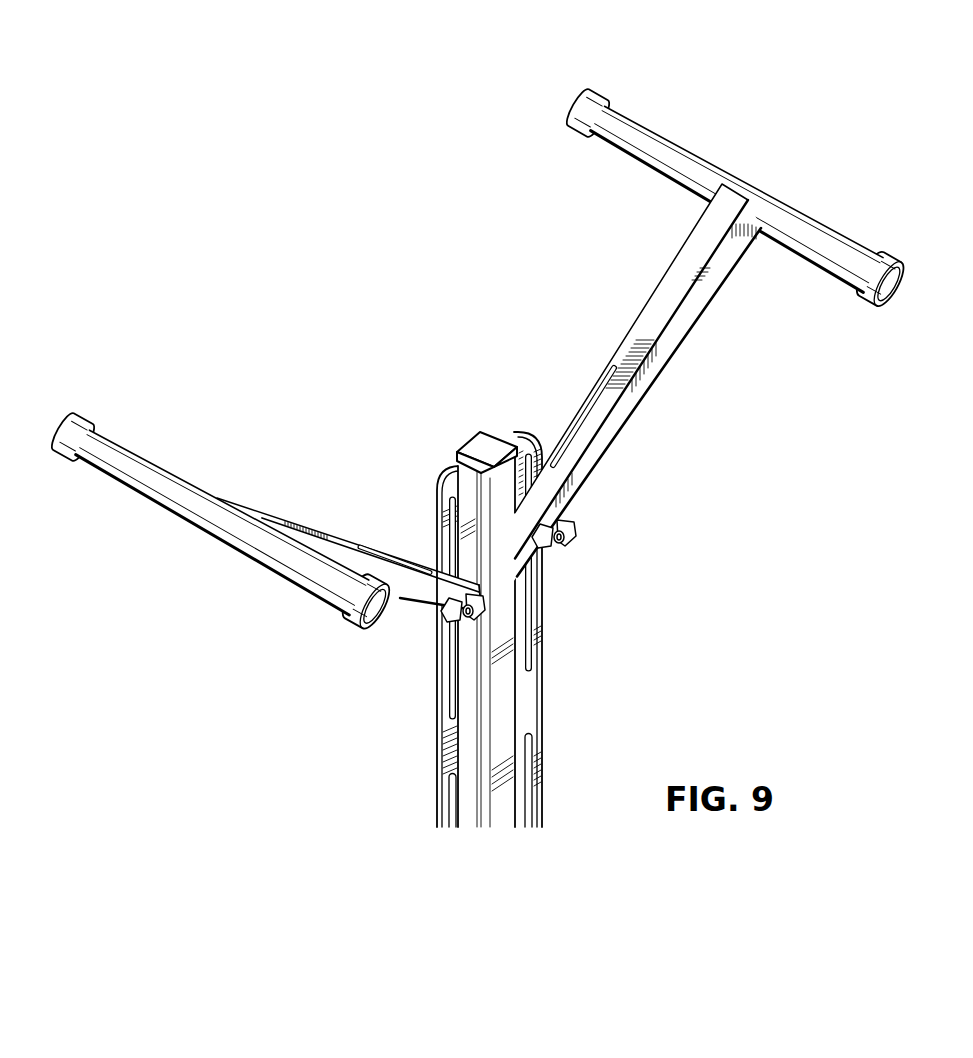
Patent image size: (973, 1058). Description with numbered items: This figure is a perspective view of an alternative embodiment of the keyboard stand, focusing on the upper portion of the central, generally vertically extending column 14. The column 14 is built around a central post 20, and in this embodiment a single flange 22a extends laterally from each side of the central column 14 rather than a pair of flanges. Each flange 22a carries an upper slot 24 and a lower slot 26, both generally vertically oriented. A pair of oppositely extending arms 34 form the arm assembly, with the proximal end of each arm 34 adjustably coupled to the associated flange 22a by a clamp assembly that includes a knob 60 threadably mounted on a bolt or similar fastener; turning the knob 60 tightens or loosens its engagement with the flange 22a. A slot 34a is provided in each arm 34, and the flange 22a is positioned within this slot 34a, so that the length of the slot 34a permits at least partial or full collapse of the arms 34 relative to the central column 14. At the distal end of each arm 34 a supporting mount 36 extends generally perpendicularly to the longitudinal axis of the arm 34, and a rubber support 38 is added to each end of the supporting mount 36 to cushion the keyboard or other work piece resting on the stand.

The column 14 is at (470, 431).
The central post 20 is at (505, 697).
The flange 22a is at (443, 490).
The upper slot 24 is at (447, 690).
The lower slot 26 is at (448, 790).
The arm 34 is at (293, 520).
The slot 34a is at (606, 388).
The supporting mount 36 is at (193, 475).
The rubber support 38 is at (85, 415).
The knob 60 is at (452, 625).